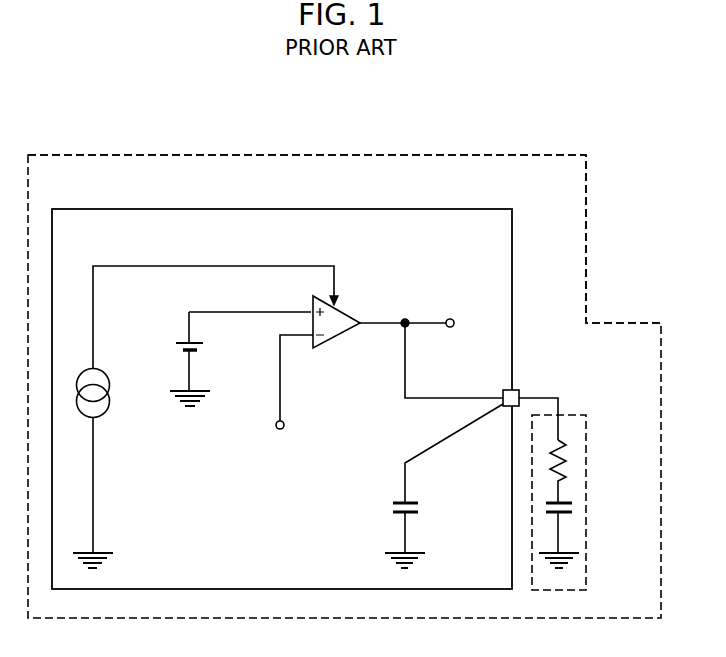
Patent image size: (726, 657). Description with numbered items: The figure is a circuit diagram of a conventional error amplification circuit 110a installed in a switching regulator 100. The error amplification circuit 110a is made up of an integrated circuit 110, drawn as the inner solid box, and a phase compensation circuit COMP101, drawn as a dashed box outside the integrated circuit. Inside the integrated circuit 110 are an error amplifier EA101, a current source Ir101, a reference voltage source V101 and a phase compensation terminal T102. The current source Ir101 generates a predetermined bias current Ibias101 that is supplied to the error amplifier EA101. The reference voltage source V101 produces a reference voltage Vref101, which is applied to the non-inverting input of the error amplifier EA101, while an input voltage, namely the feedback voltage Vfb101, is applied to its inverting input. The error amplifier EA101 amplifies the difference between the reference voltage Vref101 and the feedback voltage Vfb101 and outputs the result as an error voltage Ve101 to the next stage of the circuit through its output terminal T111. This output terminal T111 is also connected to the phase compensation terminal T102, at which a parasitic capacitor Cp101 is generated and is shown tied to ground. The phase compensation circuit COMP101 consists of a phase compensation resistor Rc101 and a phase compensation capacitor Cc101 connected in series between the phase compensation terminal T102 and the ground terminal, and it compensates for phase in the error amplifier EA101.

The switching regulator 100 is at (466, 100).
The error amplification circuit 110a is at (511, 157).
The integrated circuit 110 is at (440, 208).
The bias current Ibias101 is at (236, 253).
The current source Ir101 is at (109, 382).
The reference voltage source V101 is at (180, 340).
The reference voltage Vref101 is at (241, 312).
The error amplifier EA101 is at (337, 337).
The input voltage (feedback voltage) Vfb101 is at (284, 418).
The output terminal T111 is at (369, 318).
The error voltage Ve101 is at (451, 314).
The phase compensation terminal T102 is at (503, 391).
The parasitic capacitor Cp101 is at (418, 503).
The phase compensation circuit COMP101 is at (590, 397).
The phase compensation resistor Rc101 is at (567, 452).
The phase compensation capacitor Cc101 is at (566, 501).